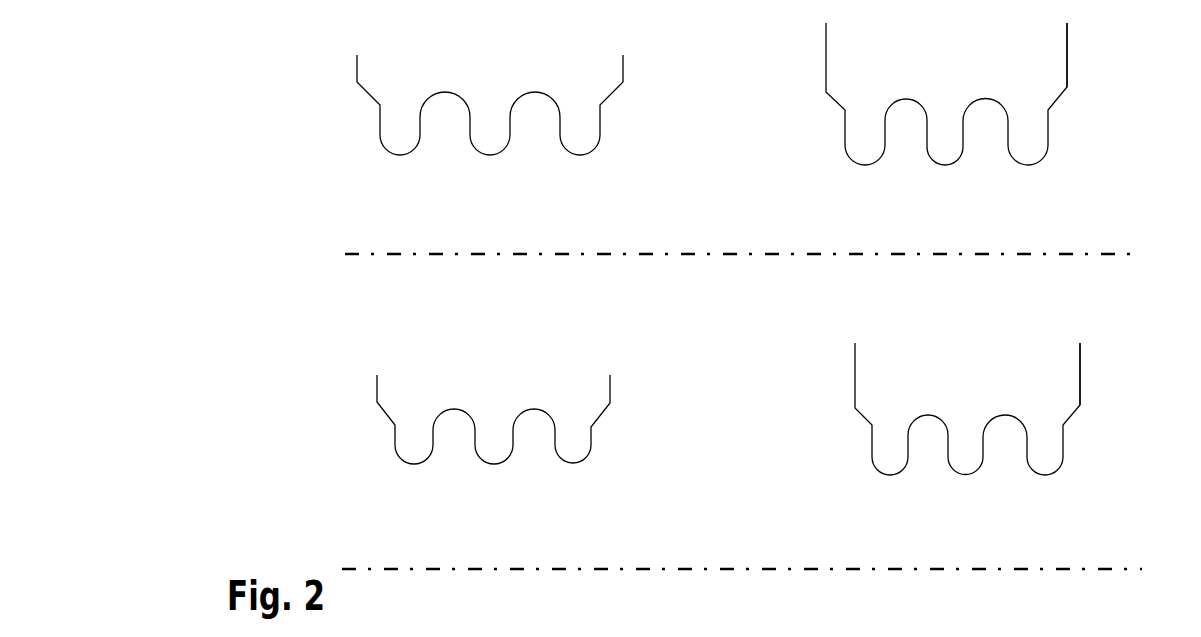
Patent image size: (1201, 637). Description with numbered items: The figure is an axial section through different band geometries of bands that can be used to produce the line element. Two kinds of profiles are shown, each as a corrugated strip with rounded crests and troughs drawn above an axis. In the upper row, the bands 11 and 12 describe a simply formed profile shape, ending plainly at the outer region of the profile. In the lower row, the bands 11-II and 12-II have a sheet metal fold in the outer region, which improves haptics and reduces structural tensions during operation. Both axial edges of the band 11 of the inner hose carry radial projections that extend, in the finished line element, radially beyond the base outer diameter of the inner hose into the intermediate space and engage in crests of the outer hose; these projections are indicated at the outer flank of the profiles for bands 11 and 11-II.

The band 11 is at (953, 166).
The band 12 is at (492, 156).
The band 11-II is at (960, 477).
The band 12-II is at (493, 466).